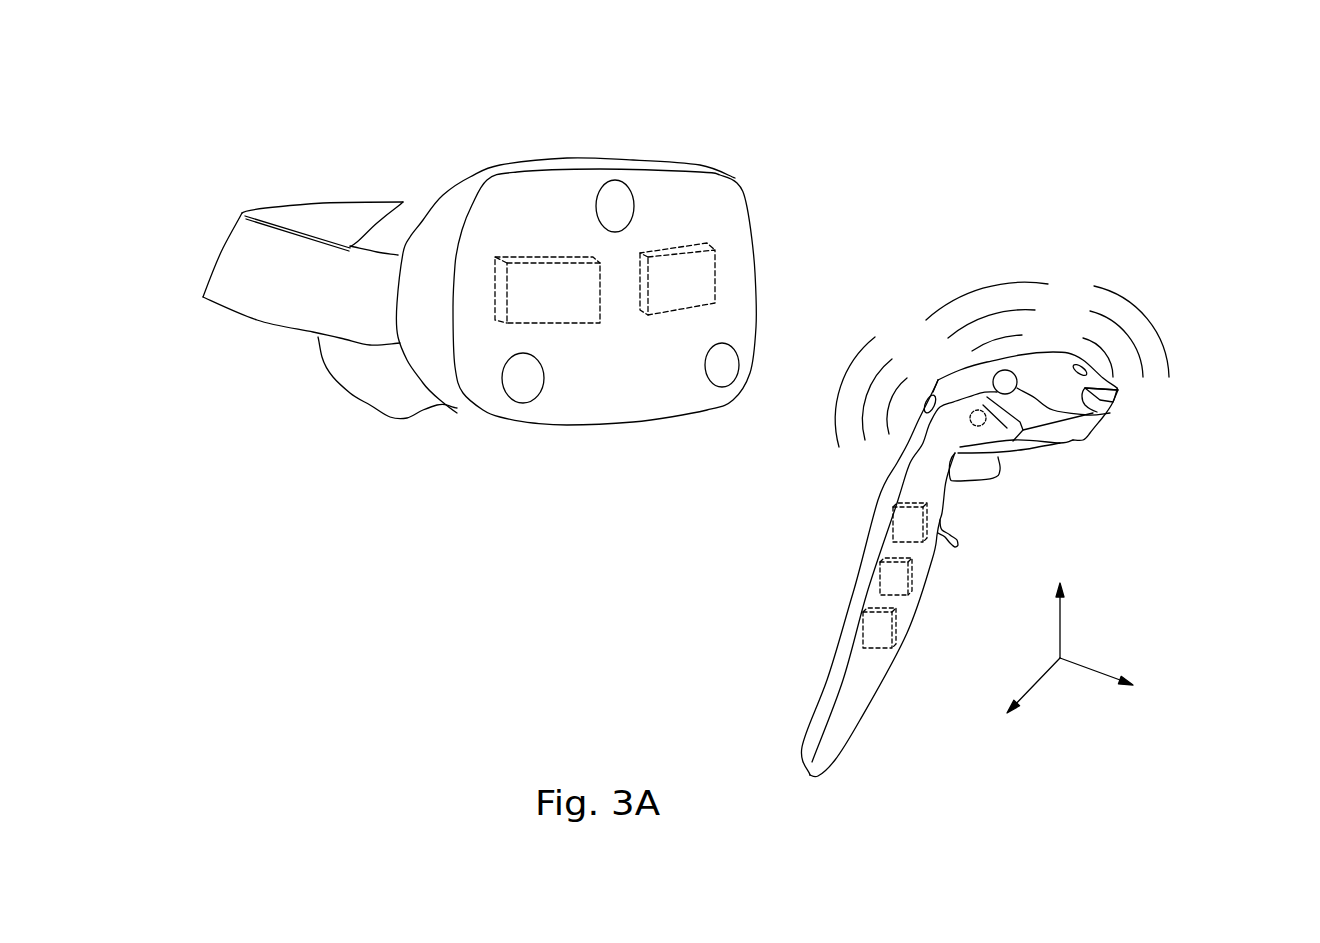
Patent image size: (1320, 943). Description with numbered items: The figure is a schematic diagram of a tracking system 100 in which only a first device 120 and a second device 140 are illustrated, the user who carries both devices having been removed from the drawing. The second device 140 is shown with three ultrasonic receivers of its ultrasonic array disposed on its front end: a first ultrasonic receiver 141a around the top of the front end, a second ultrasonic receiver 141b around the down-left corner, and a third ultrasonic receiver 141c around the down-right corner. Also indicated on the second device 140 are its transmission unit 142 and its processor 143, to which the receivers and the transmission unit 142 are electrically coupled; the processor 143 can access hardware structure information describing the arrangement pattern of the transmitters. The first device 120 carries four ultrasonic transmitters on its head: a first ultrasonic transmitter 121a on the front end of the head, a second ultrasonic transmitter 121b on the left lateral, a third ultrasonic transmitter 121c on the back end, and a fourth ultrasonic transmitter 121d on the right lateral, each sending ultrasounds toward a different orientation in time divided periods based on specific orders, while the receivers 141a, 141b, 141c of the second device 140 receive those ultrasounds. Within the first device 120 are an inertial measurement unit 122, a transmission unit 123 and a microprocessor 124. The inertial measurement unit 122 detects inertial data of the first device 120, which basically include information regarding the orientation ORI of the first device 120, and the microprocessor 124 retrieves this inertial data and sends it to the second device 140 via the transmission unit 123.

The tracking system 100 is at (990, 75).
The second device 140 is at (740, 170).
The first device 120 is at (1045, 332).
The first ultrasonic receiver 141a is at (617, 197).
The second ultrasonic receiver 141b is at (518, 403).
The third ultrasonic receiver 141c is at (720, 387).
The transmission unit 142 is at (663, 312).
The processor 143 is at (582, 322).
The first ultrasonic transmitter 121a is at (1117, 395).
The second ultrasonic transmitter 121b is at (978, 427).
The third ultrasonic transmitter 121c is at (937, 382).
The fourth ultrasonic transmitter 121d is at (1093, 413).
The inertial measurement unit 122 is at (903, 524).
The transmission unit 123 is at (888, 578).
The microprocessor 124 is at (870, 630).
The orientation ORI is at (1142, 622).